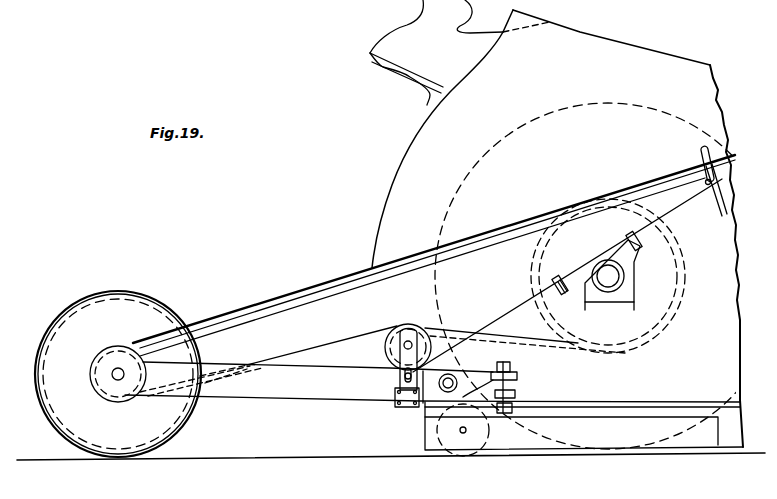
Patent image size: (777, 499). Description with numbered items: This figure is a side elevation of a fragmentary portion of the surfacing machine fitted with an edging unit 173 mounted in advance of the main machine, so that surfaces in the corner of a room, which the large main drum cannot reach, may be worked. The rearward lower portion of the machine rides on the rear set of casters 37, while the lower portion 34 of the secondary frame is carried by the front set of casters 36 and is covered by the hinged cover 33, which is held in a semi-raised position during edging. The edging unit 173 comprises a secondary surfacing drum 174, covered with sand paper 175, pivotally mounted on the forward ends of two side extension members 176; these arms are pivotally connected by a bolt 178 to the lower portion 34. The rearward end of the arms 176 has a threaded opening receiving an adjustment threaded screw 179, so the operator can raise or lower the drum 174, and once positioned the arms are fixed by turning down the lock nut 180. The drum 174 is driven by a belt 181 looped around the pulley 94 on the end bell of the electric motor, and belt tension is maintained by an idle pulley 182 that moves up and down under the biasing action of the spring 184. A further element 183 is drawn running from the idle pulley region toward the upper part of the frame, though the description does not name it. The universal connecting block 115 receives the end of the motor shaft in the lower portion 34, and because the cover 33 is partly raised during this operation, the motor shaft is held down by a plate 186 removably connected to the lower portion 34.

The cover 33 is at (393, 180).
The lower portion of the secondary frame 34 is at (628, 383).
The front set of casters 36 is at (463, 455).
The rear set of casters 37 is at (371, 54).
The pulley 94 is at (674, 318).
The universal connecting block 115 is at (628, 263).
The edging unit 173 is at (130, 273).
The secondary surfacing drum 174 is at (146, 308).
The sand paper 175 is at (54, 326).
The side extension members 176 is at (308, 388).
The bolt 178 is at (443, 395).
The adjustment threaded screw 179 is at (508, 391).
The lock nut 180 is at (508, 368).
The belt 181 is at (322, 262).
The idle pulley 182 is at (429, 304).
The connecting rod 183 is at (708, 170).
The spring 184 is at (395, 402).
The plate 186 is at (606, 230).